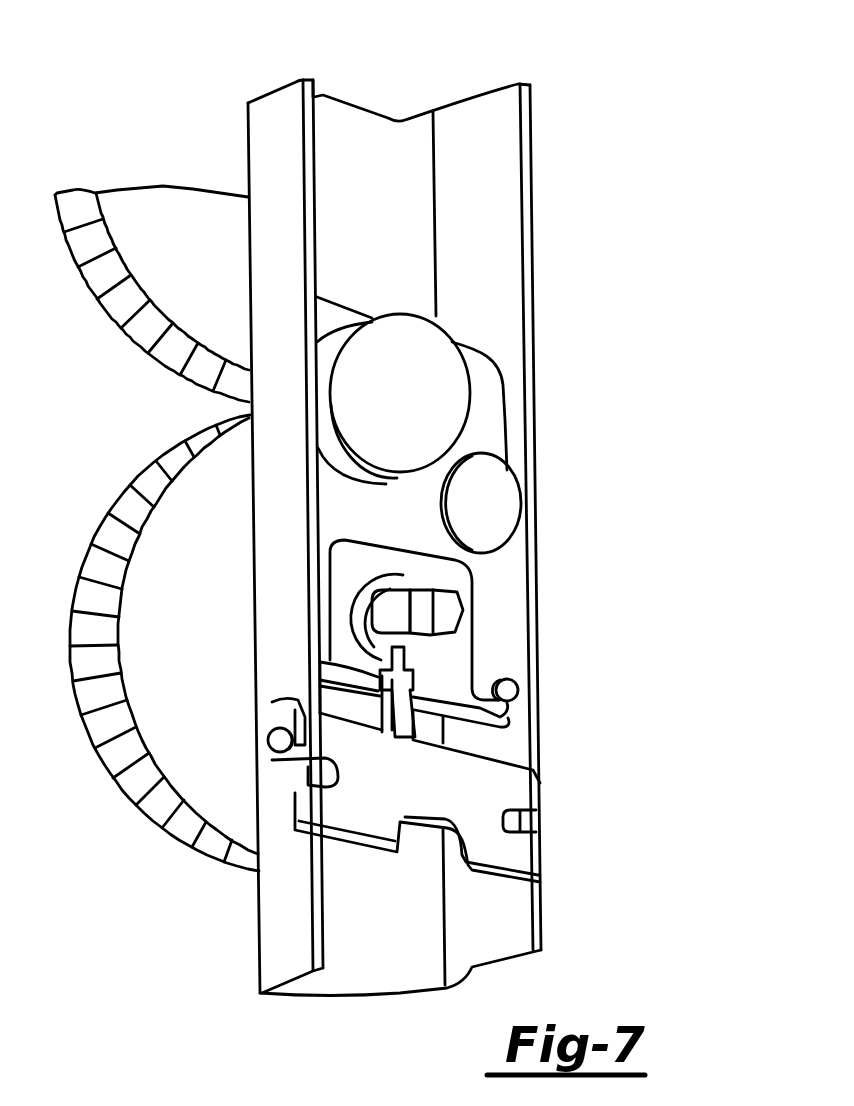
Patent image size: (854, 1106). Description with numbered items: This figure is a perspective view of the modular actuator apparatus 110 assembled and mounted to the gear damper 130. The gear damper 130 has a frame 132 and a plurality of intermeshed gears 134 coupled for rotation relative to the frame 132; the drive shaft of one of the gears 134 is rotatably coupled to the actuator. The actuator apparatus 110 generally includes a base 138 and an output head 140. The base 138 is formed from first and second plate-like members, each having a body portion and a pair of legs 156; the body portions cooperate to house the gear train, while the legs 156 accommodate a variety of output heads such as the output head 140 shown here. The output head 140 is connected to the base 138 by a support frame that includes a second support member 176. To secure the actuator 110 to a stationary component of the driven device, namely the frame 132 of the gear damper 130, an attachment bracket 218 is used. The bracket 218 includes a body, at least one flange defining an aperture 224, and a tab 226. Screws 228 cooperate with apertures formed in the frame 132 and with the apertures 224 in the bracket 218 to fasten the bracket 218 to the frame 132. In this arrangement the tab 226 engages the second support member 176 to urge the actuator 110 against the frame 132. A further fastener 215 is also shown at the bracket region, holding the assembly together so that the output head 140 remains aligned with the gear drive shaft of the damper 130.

The gear damper 130 is at (527, 60).
The frame 132 is at (492, 160).
The intermeshed gears 134 is at (174, 192).
The modular actuator apparatus 110 is at (491, 333).
The base 138 is at (507, 418).
The legs 156 is at (490, 612).
The second support member 176 is at (453, 668).
The rivet 215 is at (512, 692).
The output head 140 is at (479, 729).
The tab 226 is at (320, 662).
The aperture 224 is at (272, 702).
The screws 228 is at (270, 742).
The attachment bracket 218 is at (483, 857).